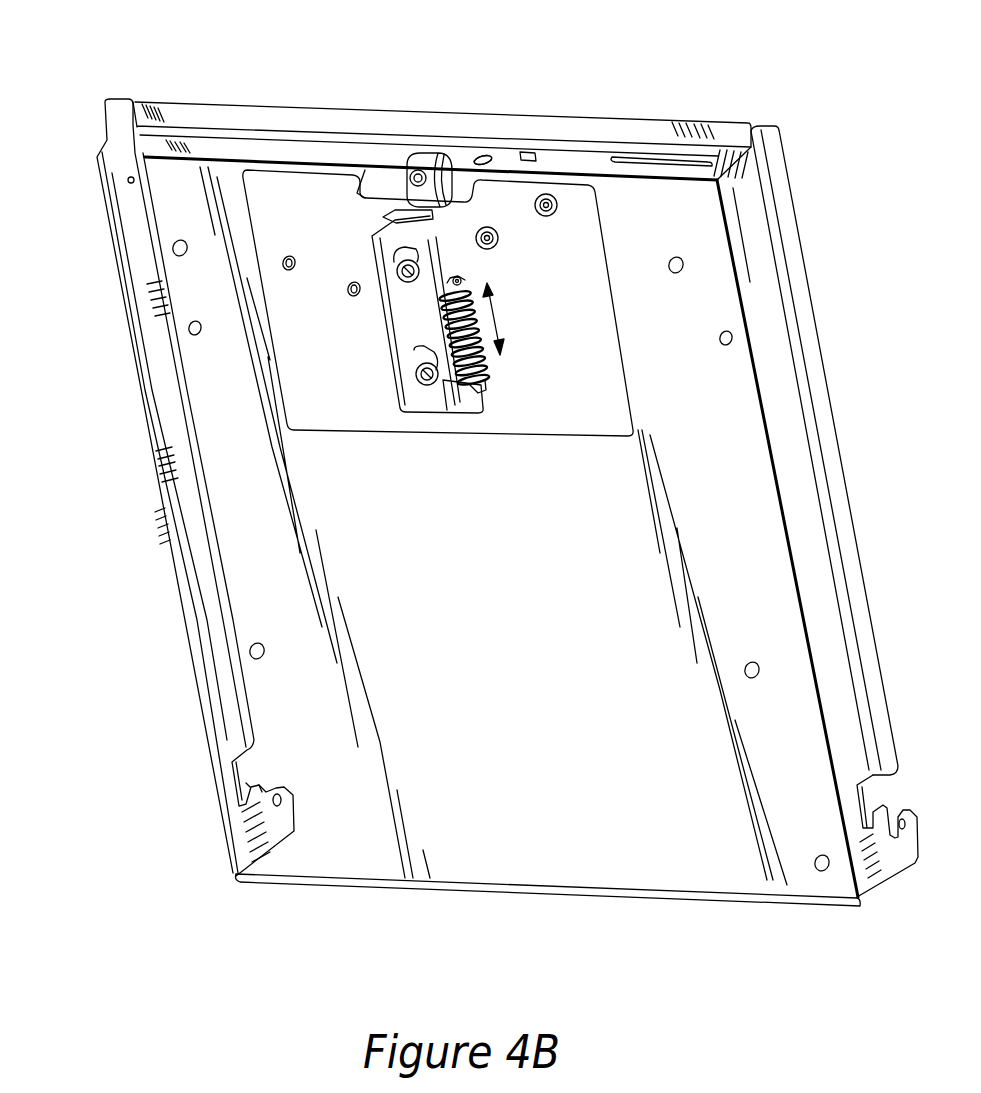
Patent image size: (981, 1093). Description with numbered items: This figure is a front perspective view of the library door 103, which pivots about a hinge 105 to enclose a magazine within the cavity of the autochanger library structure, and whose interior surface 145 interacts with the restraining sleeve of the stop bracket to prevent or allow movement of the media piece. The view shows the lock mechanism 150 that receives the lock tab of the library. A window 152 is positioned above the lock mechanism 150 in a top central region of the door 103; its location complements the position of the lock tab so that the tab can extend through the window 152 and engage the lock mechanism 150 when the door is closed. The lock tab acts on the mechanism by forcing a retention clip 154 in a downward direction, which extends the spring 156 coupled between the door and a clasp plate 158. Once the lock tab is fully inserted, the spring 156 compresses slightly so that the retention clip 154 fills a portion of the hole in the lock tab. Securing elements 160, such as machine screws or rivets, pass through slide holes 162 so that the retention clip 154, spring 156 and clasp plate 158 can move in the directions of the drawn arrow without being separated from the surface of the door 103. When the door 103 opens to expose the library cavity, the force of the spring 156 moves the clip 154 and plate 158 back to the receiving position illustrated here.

The door 103 is at (705, 84).
The hinge 105 is at (260, 837).
The interior surface 145 is at (190, 700).
The lock mechanism 150 is at (552, 298).
The window 152 is at (474, 163).
The retention clip 154 is at (446, 158).
The spring 156 is at (484, 370).
The clasp plate 158 is at (421, 400).
The securing elements 160 is at (398, 281).
The slide holes 162 is at (372, 236).